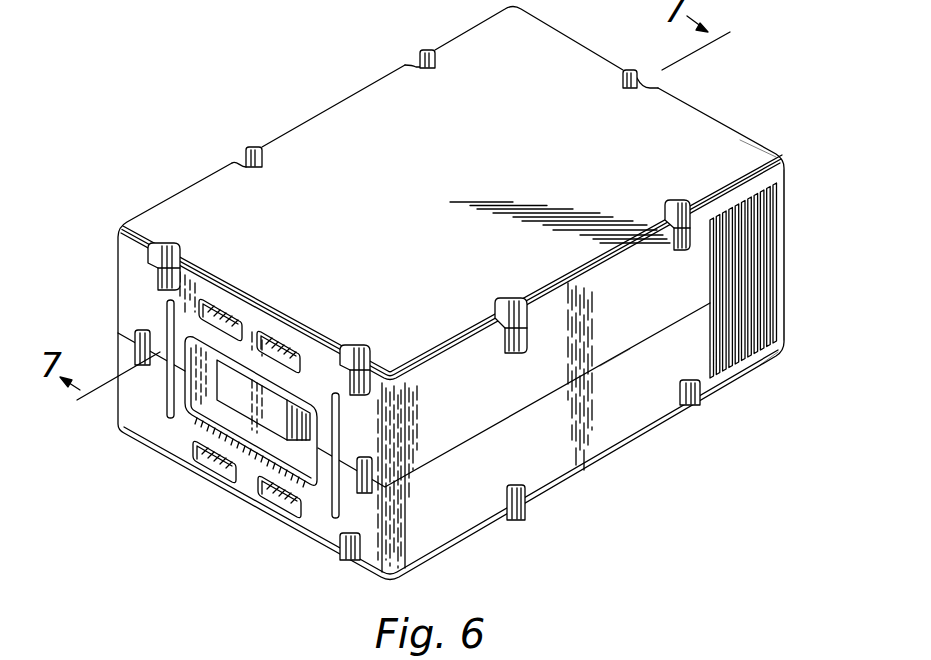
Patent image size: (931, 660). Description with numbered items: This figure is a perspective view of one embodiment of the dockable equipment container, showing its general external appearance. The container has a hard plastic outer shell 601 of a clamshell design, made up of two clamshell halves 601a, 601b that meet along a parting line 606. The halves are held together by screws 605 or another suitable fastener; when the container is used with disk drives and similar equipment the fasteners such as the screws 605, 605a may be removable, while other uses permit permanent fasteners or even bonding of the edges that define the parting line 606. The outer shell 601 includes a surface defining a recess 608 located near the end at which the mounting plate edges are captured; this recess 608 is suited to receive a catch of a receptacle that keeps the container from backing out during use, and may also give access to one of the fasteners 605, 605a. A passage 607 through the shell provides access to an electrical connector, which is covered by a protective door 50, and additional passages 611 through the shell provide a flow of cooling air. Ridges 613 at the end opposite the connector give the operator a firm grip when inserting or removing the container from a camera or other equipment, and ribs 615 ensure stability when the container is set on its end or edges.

The protective door 50 is at (237, 398).
The outer shell 601 is at (805, 150).
The clamshell half 601a is at (748, 138).
The clamshell half 601b is at (781, 350).
The screws 605 is at (150, 251).
The screw 605a is at (516, 505).
The parting line 606 is at (622, 357).
The passage 607 is at (205, 413).
The recess 608 is at (244, 160).
The passages 611 is at (232, 315).
The ridges 613 is at (753, 354).
The ribs 615 is at (163, 397).